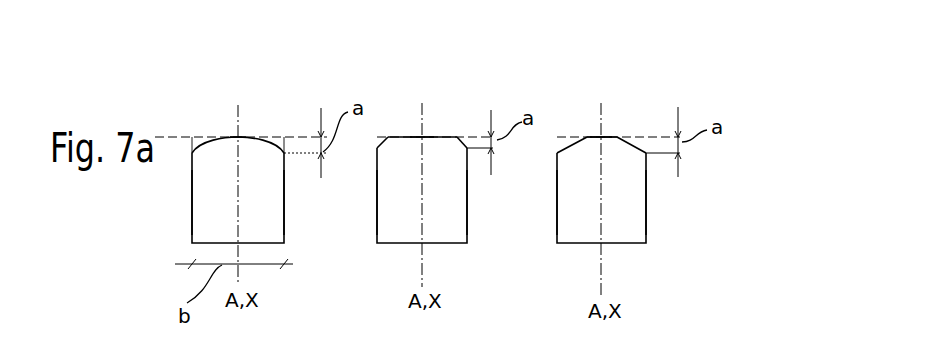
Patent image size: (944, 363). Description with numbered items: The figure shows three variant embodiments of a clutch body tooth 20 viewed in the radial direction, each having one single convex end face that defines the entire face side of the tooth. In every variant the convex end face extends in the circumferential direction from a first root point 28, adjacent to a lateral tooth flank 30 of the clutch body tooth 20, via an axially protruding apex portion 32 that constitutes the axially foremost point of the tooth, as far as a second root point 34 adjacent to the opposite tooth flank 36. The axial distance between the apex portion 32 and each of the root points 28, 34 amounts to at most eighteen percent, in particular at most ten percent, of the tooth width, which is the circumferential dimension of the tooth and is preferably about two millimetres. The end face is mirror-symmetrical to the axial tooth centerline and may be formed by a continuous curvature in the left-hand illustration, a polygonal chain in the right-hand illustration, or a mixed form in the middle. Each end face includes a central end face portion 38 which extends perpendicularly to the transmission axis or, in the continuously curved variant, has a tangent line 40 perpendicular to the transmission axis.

The clutch body tooth 20 is at (272, 225).
The first root point 28 is at (188, 152).
The lateral tooth flank 30 is at (192, 200).
The apex portion 32 is at (239, 136).
The second root point 34 is at (284, 152).
The opposite tooth flank 36 is at (284, 202).
The end face portion 38 is at (405, 135).
The tangent line 40 is at (190, 137).